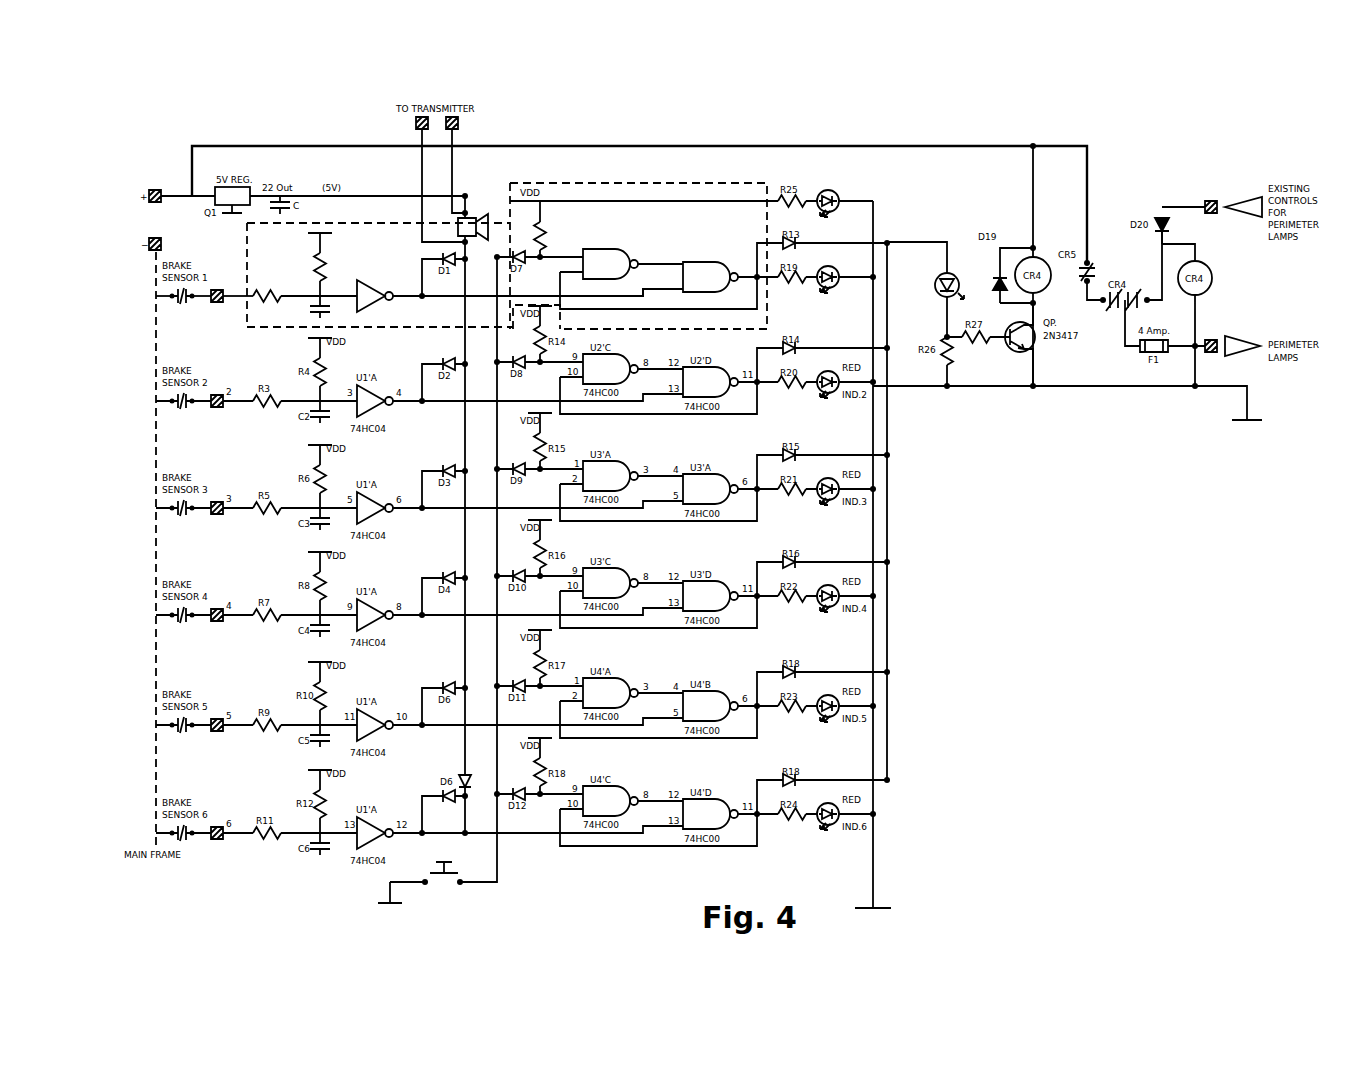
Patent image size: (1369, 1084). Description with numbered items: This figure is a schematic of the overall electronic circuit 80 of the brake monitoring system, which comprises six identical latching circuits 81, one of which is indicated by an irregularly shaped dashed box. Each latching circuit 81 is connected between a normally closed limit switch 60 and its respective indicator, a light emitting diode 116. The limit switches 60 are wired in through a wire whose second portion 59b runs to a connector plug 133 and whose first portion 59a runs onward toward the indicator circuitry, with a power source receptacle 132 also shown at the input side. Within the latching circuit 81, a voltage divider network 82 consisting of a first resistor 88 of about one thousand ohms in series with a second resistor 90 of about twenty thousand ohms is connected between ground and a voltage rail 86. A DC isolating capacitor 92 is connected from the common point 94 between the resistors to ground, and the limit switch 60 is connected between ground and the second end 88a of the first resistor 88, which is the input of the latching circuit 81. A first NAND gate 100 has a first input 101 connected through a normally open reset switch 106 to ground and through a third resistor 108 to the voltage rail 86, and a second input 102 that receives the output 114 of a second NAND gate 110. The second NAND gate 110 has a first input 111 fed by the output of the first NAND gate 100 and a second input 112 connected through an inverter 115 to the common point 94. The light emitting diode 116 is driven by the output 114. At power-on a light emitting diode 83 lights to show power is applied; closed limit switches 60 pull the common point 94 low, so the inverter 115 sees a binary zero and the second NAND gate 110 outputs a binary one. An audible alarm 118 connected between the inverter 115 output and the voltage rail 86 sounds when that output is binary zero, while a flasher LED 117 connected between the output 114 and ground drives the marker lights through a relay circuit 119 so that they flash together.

The first portion of wire 59a is at (192, 301).
The second portion of wire 59b is at (237, 285).
The limit switch 60 is at (170, 302).
The electronic circuit 80 is at (898, 133).
The latching circuit 81 is at (637, 183).
The voltage divider network 82 is at (362, 211).
The light emitting diode 83 is at (835, 190).
The voltage rail 86 is at (313, 236).
The first resistor 88 is at (262, 300).
The second end of first resistor 88a is at (254, 300).
The second resistor 90 is at (332, 260).
The DC isolating capacitor 92 is at (332, 313).
The common point 94 is at (340, 292).
The first NAND gate 100 is at (614, 256).
The first input of first NAND gate 101 is at (563, 256).
The second input of first NAND gate 102 is at (572, 275).
The reset switch 106 is at (470, 893).
The third resistor 108 is at (548, 232).
The second NAND gate 110 is at (715, 258).
The first input of second NAND gate 111 is at (664, 263).
The second input of second NAND gate 112 is at (655, 300).
The output of second NAND gate 114 is at (748, 282).
The inverter 115 is at (398, 301).
The light emitting diode 116 is at (832, 292).
The flasher LED 117 is at (951, 272).
The audible alarm 118 is at (471, 218).
The relay circuit 119 is at (1087, 378).
The power source receptacle 132 is at (215, 304).
The connector plug 133 is at (231, 301).